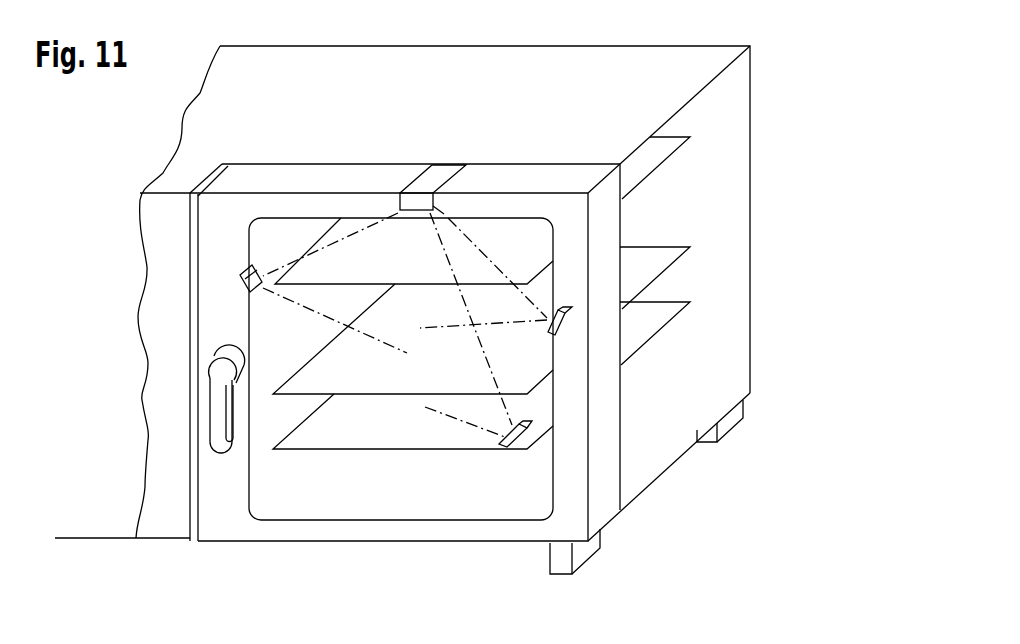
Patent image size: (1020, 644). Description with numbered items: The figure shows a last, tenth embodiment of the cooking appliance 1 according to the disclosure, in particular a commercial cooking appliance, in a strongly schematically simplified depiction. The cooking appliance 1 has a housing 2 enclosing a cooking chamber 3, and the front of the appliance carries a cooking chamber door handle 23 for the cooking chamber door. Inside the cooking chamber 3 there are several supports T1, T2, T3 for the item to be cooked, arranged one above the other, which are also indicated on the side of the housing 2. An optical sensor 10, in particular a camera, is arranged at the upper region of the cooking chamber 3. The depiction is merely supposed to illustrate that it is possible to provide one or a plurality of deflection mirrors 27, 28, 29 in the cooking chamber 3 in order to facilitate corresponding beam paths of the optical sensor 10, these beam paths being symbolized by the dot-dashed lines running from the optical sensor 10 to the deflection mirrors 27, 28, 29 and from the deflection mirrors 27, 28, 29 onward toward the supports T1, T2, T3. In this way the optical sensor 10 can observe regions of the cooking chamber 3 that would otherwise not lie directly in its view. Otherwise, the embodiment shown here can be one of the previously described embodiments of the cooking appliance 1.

The cooking appliance 1 is at (824, 42).
The housing 2 is at (760, 109).
The cooking chamber 3 is at (388, 500).
The optical sensor 10 is at (448, 158).
The cooking chamber door handle 23 is at (222, 432).
The deflection mirror 27 is at (240, 283).
The deflection mirror 28 is at (523, 452).
The deflection mirror 29 is at (566, 313).
The support for item to be cooked T1 is at (670, 157).
The support for item to be cooked T2 is at (670, 267).
The support for item to be cooked T3 is at (670, 320).